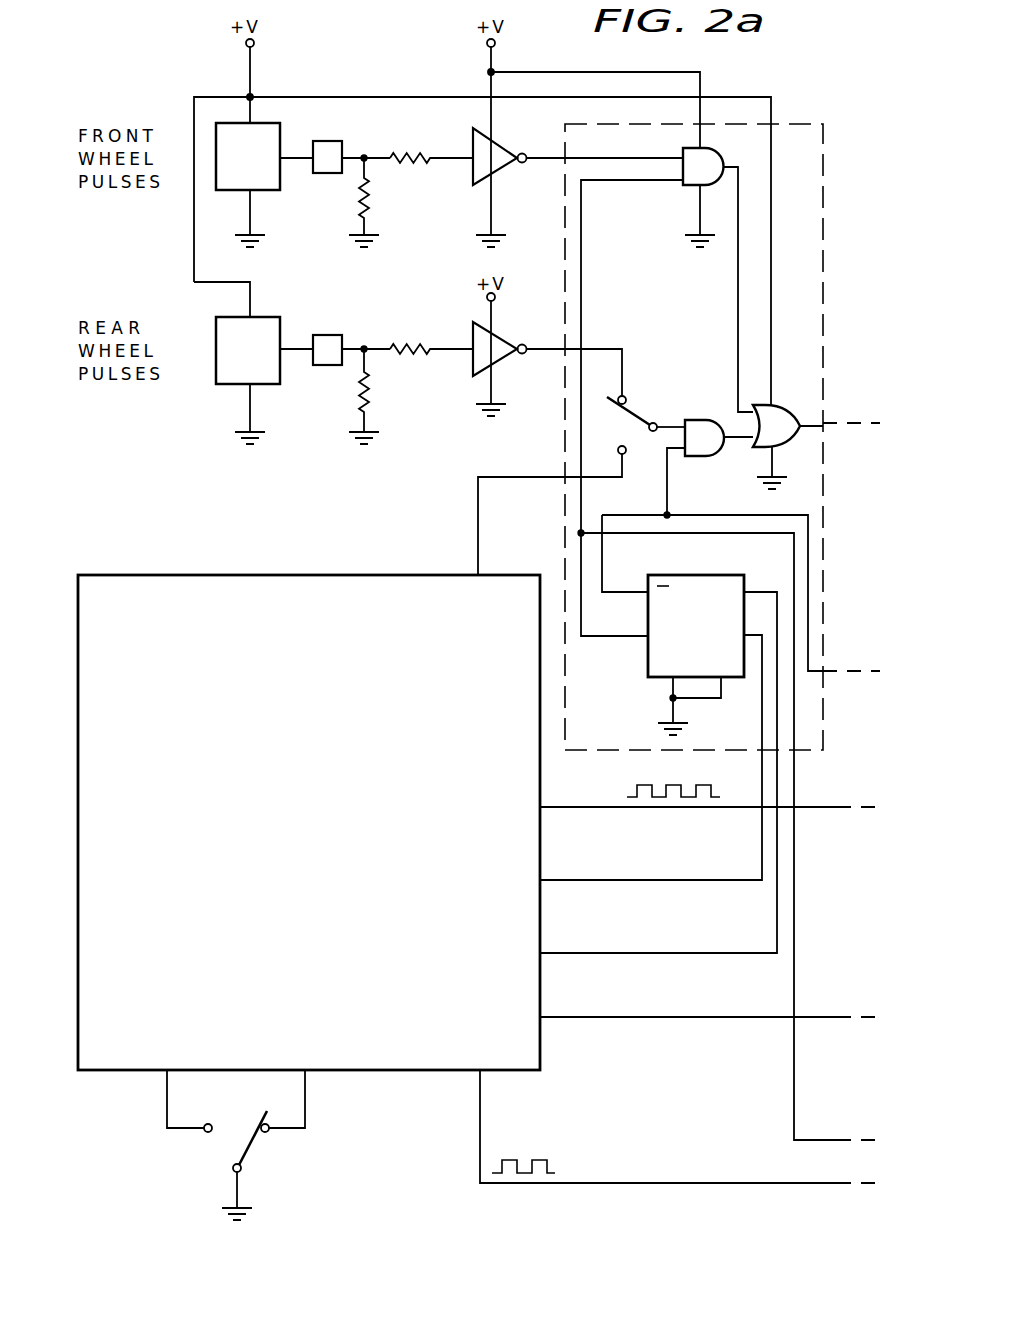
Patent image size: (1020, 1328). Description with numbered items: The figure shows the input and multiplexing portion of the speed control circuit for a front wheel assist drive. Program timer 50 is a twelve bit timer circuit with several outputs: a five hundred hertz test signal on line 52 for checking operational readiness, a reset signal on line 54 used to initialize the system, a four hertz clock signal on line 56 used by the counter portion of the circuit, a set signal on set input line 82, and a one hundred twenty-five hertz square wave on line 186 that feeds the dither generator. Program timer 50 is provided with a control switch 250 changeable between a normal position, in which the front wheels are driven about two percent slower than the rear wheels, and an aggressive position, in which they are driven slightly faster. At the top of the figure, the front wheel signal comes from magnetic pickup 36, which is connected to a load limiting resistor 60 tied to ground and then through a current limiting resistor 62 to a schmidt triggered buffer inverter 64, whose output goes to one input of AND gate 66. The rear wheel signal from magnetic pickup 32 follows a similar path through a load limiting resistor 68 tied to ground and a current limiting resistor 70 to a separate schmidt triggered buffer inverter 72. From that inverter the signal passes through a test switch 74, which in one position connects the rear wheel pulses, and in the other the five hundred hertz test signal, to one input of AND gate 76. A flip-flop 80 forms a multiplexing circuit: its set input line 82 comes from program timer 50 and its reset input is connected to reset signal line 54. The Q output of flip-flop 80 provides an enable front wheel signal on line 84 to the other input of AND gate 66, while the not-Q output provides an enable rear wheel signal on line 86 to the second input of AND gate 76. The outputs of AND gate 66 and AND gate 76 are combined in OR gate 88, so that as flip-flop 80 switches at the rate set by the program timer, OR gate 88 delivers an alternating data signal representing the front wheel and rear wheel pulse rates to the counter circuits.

The magnetic pickup 36 is at (277, 142).
The current limiting resistor 62 is at (400, 152).
The load limiting resistor 60 is at (372, 201).
The schmidt triggered buffer inverter 64 is at (500, 152).
The AND gate 66 is at (691, 157).
The magnetic pickup 32 is at (264, 325).
The current limiting resistor 70 is at (398, 344).
The schmidt triggered buffer inverter 72 is at (494, 343).
The load limiting resistor 68 is at (372, 397).
The test switch 74 is at (630, 406).
The AND gate 76 is at (700, 425).
The OR gate 88 is at (781, 414).
The line 52 is at (478, 520).
The program timer 50 is at (225, 585).
The flip-flop 80 is at (698, 596).
The line 86 is at (648, 589).
The line 84 is at (636, 643).
The line 56 is at (598, 806).
The set input line 82 is at (605, 879).
The line 54 is at (612, 951).
The control switch 250 is at (232, 1168).
The line 186 is at (624, 1183).